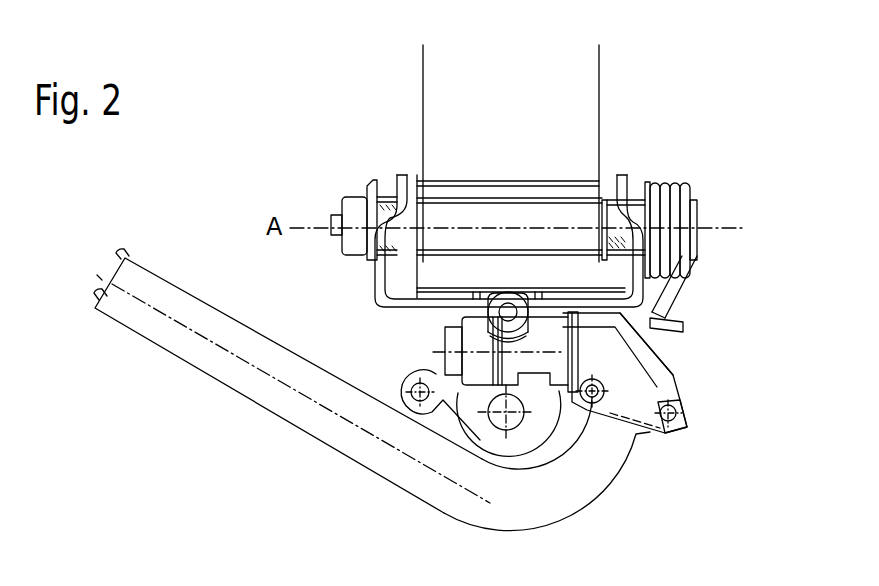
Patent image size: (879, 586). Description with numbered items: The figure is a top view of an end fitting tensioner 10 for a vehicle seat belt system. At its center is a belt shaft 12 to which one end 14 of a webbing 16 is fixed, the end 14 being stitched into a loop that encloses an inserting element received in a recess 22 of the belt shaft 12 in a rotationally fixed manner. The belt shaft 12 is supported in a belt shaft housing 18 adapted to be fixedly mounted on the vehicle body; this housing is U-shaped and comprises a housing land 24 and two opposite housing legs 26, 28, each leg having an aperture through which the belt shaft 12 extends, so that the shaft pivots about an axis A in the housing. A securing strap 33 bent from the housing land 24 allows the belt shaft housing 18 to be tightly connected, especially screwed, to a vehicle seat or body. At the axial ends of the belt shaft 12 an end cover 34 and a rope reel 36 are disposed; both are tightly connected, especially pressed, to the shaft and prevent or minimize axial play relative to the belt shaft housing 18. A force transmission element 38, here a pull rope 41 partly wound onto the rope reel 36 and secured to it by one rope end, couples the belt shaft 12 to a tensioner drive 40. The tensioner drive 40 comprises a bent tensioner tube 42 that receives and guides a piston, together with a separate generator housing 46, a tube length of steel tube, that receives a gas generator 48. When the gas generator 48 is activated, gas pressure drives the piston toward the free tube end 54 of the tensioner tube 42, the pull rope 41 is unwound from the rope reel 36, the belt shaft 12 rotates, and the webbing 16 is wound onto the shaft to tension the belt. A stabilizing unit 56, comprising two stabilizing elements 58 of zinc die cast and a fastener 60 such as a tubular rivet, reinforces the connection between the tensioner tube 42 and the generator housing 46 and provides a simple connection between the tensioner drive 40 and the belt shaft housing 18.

The end fitting tensioner 10 is at (227, 485).
The belt shaft 12 is at (657, 190).
The end of the webbing 14 is at (412, 170).
The webbing 16 is at (590, 80).
The belt shaft housing 18 is at (655, 310).
The recess 22 is at (606, 180).
The housing land 24 is at (420, 322).
The housing leg 26 is at (378, 260).
The housing leg 28 is at (618, 188).
The securing strap 33 is at (520, 443).
The end cover 34 is at (352, 212).
The rope reel 36 is at (705, 212).
The force transmission element 38 is at (677, 298).
The pull rope 41 is at (727, 308).
The tensioner drive 40 is at (647, 482).
The tensioner tube 42 is at (233, 377).
The generator housing 46 is at (443, 400).
The gas generator 48 is at (447, 356).
The free tube end 54 is at (98, 262).
The stabilizing unit 56 is at (668, 388).
The stabilizing element 58 is at (709, 356).
The fastener 60 is at (590, 405).